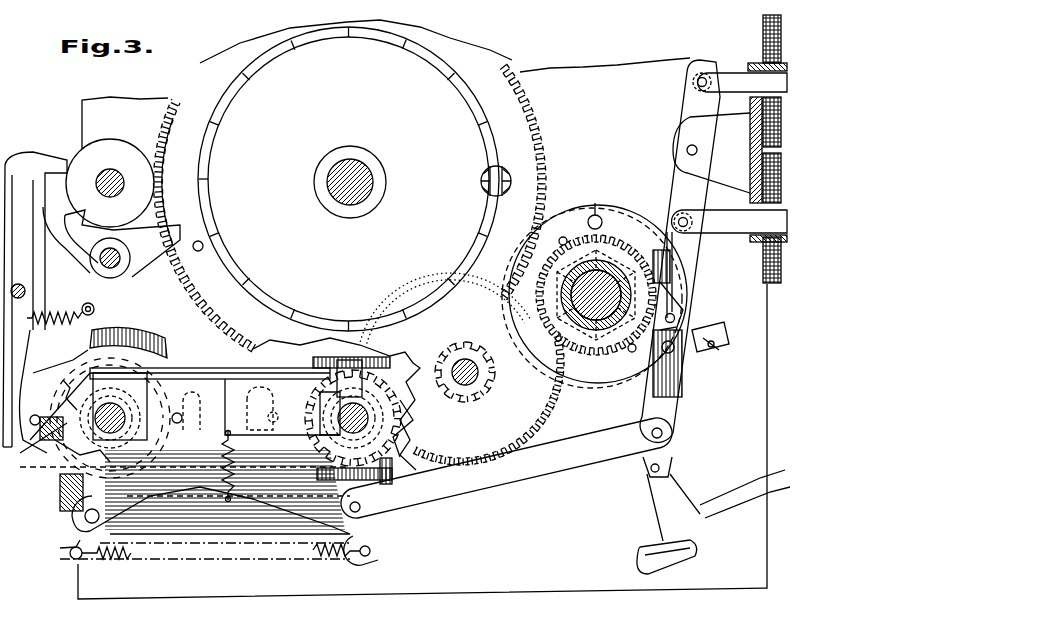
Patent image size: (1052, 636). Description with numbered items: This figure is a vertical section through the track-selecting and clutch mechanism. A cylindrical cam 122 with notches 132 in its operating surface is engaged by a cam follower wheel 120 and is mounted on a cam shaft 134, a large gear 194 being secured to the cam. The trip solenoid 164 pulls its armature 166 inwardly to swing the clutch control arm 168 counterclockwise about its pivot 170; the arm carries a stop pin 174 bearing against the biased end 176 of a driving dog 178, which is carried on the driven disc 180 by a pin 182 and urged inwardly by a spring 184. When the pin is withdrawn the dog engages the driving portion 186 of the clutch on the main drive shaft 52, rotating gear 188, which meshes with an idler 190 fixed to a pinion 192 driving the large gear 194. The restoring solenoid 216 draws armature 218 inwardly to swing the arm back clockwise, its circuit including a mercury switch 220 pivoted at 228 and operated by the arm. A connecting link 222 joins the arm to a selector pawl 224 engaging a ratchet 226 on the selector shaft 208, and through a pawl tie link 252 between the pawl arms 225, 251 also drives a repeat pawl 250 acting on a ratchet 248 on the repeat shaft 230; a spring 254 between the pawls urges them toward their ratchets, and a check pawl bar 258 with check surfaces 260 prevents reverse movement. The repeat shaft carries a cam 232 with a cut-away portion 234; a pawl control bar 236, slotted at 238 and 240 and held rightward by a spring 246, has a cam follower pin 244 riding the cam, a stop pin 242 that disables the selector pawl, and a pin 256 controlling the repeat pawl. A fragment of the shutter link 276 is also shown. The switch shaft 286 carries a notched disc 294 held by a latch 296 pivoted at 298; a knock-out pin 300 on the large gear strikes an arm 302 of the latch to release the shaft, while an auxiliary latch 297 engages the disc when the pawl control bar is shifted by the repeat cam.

The main drive shaft 52 is at (590, 345).
The cam follower wheel 120 is at (502, 157).
The cylindrical cam 122 is at (213, 212).
The notches 132 is at (455, 92).
The cam shaft 134 is at (357, 172).
The trip solenoid 164 is at (764, 256).
The armature 166 is at (722, 227).
The clutch control arm 168 is at (672, 187).
The pivot 170 is at (698, 150).
The stop pin 174 is at (686, 352).
The biased end 176 is at (706, 334).
The driving dog 178 is at (680, 278).
The driven disc 180 is at (566, 215).
The pin 182 is at (597, 266).
The spring 184 is at (620, 360).
The driving portion of the clutch 186 is at (612, 360).
The gear 188 is at (625, 235).
The idler 190 is at (535, 437).
The pinion 192 is at (470, 402).
The large gear 194 is at (540, 103).
The selector shaft 208 is at (344, 385).
The restoring solenoid 216 is at (768, 18).
The armature 218 is at (730, 78).
The mercury switch 220 is at (657, 585).
The connecting link 222 is at (477, 496).
The selector pawl 224 is at (305, 494).
The pawl arm 225 is at (402, 470).
The ratchet 226 is at (412, 432).
The pivot 228 is at (710, 512).
The repeat shaft 230 is at (62, 490).
The cam 232 is at (65, 368).
The cut-away portion 234 is at (72, 460).
The pawl control bar 236 is at (195, 370).
The slot 238 is at (45, 452).
The slot 240 is at (295, 380).
The stop pin 242 is at (276, 410).
The cam follower pin 244 is at (36, 410).
The spring 246 is at (62, 312).
The ratchet 248 is at (72, 502).
The repeat pawl 250 is at (226, 478).
The pawl arm 251 is at (66, 540).
The pawl tie link 252 is at (230, 540).
The spring 254 is at (160, 558).
The pin 256 is at (190, 416).
The check pawl bar 258 is at (240, 380).
The check surfaces 260 is at (120, 355).
The link 276 is at (716, 347).
The switch shaft 286 is at (112, 170).
The notched disc 294 is at (82, 157).
The latch 296 is at (65, 232).
The auxiliary latch 297 is at (10, 175).
The pivot 298 is at (100, 264).
The knock-out pin 300 is at (200, 252).
The arm 302 is at (175, 215).